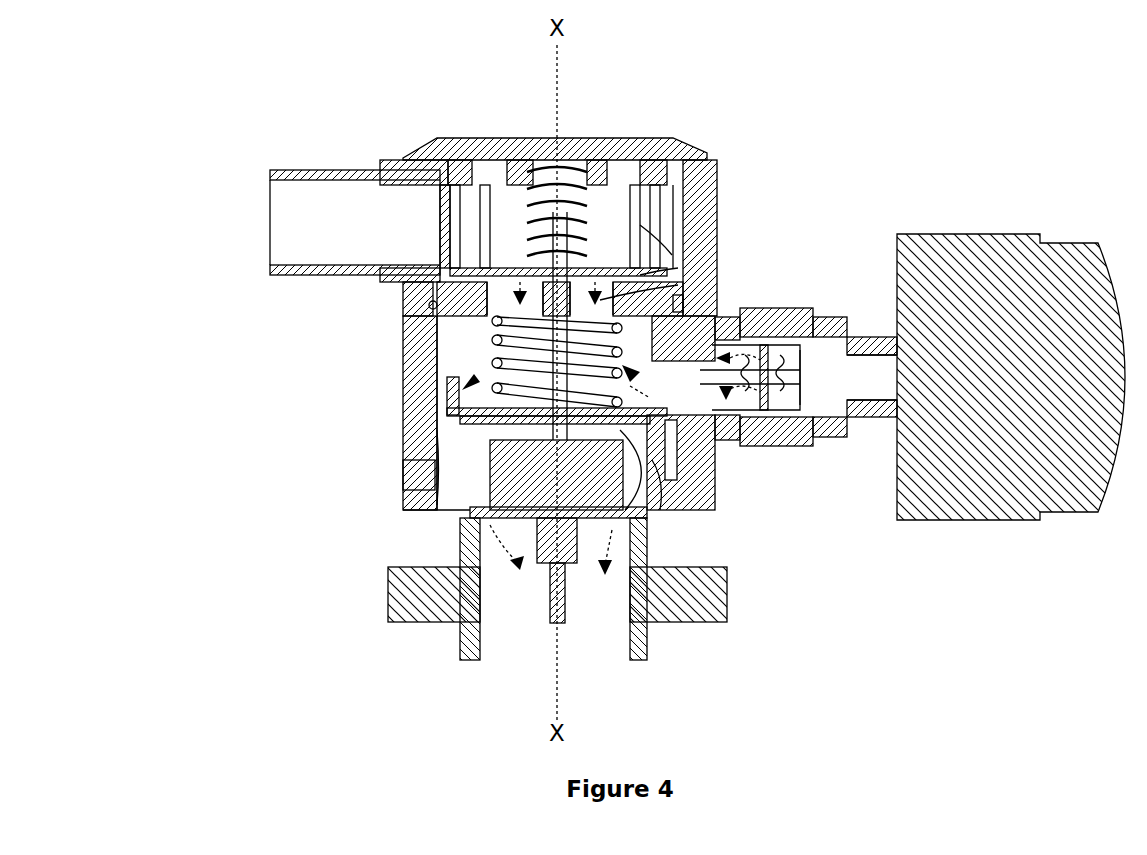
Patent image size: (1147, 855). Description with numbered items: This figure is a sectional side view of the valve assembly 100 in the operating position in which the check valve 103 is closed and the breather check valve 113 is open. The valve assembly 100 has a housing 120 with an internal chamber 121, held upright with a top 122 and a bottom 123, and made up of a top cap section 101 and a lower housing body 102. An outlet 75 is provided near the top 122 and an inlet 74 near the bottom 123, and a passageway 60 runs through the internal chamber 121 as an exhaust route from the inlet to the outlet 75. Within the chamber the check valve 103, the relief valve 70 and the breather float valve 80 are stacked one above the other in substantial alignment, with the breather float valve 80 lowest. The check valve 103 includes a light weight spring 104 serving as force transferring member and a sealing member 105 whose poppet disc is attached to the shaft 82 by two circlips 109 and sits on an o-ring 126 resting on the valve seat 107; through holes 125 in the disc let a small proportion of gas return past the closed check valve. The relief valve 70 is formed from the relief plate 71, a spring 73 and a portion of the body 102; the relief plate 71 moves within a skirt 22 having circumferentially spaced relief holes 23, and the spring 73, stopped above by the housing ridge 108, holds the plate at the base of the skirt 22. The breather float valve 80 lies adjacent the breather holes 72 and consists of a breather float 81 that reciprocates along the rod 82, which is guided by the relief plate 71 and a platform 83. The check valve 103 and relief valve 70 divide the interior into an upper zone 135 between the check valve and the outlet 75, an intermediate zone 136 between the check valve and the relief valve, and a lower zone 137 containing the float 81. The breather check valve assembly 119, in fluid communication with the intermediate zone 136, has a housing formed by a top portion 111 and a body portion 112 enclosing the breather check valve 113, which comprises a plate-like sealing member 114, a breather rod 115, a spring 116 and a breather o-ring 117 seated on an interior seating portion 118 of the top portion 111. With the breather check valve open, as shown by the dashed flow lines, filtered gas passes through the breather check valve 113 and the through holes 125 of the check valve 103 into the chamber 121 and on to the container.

The skirt 22 is at (695, 306).
The relief holes 23 is at (680, 480).
The passageway 60 is at (515, 655).
The relief valve 70 is at (415, 348).
The relief plate 71 is at (440, 410).
The breather holes 72 is at (440, 470).
The spring 73 is at (480, 330).
The inlet 74 is at (470, 478).
The outlet 75 is at (290, 215).
The breather float valve 80 is at (652, 430).
The breather float 81 is at (545, 574).
The rod 82 is at (660, 148).
The platform 83 is at (612, 480).
The valve assembly 100 is at (328, 580).
The top cap section 101 is at (400, 125).
The housing body 102 is at (428, 300).
The check valve 103 is at (478, 216).
The light weight spring 104 is at (618, 138).
The sealing member 105 is at (640, 205).
The valve seat 107 is at (445, 282).
The housing ridge 108 is at (690, 258).
The circlips 109 is at (495, 150).
The top portion 111 is at (872, 420).
The body portion 112 is at (787, 308).
The breather check valve 113 is at (758, 440).
The breather check valve sealing member 114 is at (838, 317).
The breather rod 115 is at (892, 360).
The breather check valve force transferring member 116 is at (690, 282).
The breather o-ring 117 is at (790, 437).
The interior seating portion 118 is at (800, 440).
The breather check valve assembly 119 is at (845, 230).
The housing 120 is at (710, 128).
The internal chamber 121 is at (460, 340).
The top 122 is at (540, 138).
The bottom 123 is at (425, 528).
The through holes 125 is at (520, 268).
The o-ring 126 is at (685, 225).
The upper zone 135 is at (688, 172).
The intermediate zone 136 is at (445, 372).
The lower zone 137 is at (420, 505).